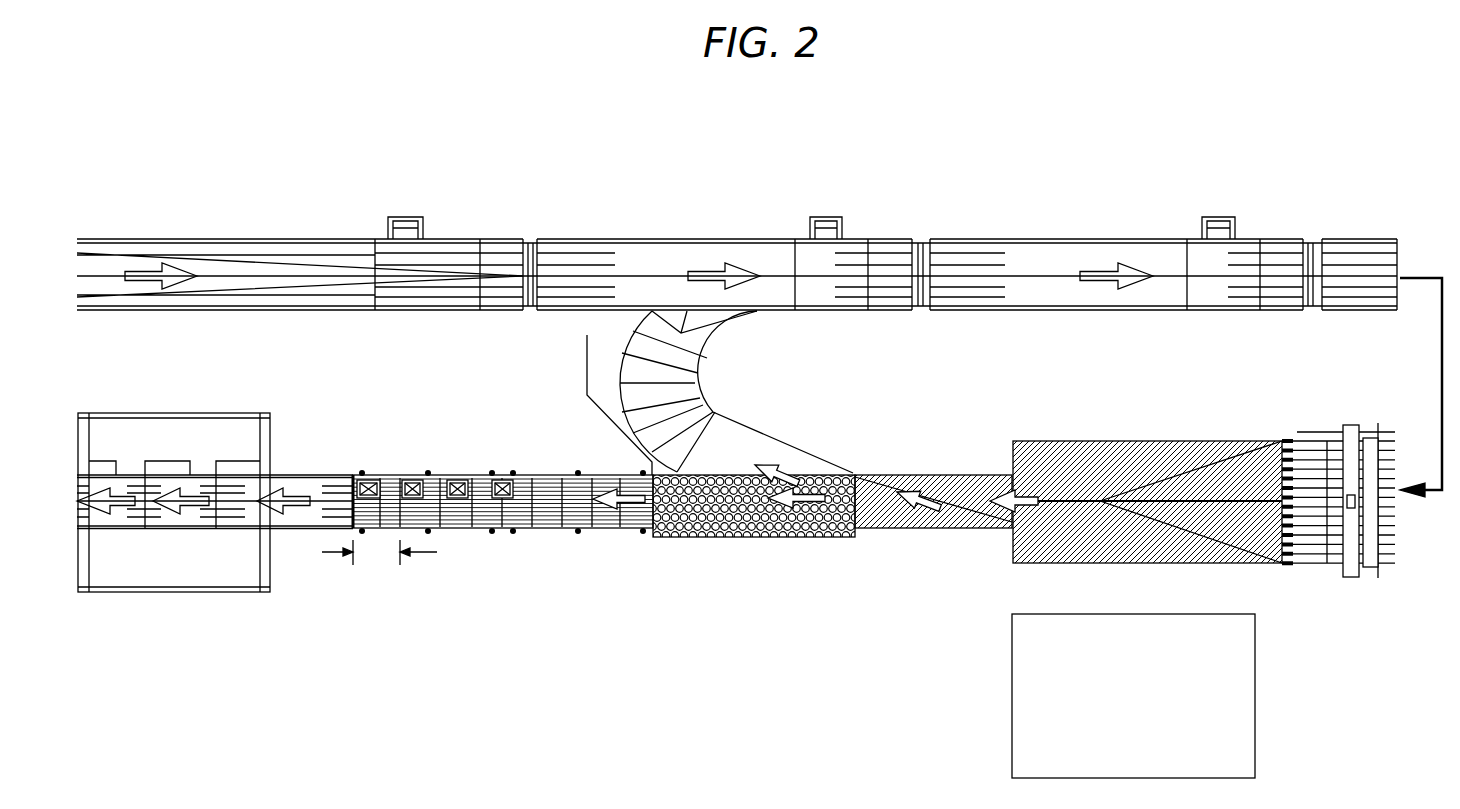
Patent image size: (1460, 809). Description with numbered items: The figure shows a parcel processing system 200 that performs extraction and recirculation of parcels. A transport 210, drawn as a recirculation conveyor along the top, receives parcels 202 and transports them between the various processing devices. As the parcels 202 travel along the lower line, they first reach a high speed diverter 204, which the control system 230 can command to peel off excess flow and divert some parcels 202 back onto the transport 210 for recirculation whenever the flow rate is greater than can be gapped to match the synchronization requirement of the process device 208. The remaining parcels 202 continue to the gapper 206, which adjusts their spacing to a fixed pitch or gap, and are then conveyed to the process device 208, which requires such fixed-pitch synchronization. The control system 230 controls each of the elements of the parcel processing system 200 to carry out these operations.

The parcel processing system 200 is at (990, 130).
The parcels 202 is at (459, 474).
The high speed diverter 204 is at (858, 475).
The gapper 206 is at (580, 473).
The process device 208 is at (270, 437).
The transport 210 is at (757, 239).
The control system 230 is at (1257, 698).